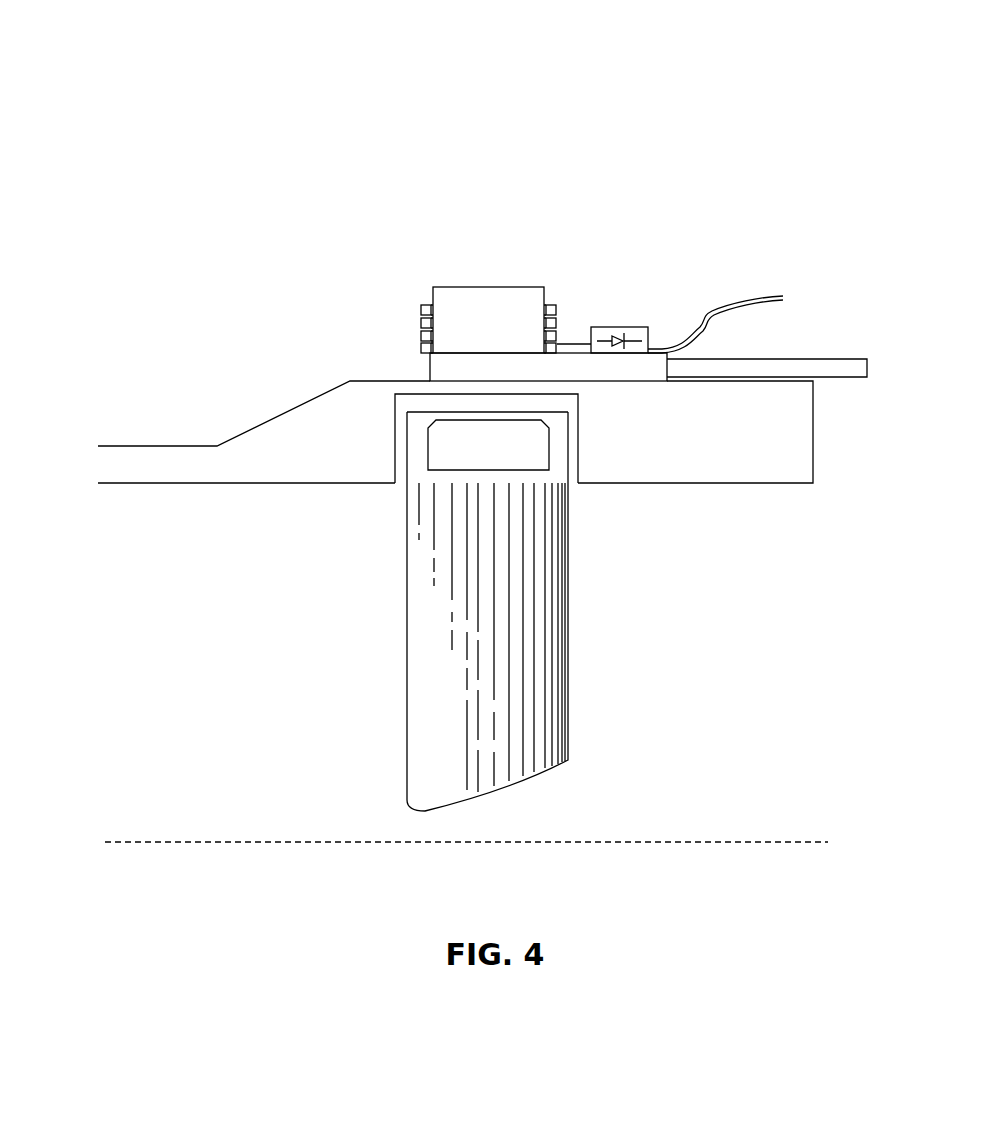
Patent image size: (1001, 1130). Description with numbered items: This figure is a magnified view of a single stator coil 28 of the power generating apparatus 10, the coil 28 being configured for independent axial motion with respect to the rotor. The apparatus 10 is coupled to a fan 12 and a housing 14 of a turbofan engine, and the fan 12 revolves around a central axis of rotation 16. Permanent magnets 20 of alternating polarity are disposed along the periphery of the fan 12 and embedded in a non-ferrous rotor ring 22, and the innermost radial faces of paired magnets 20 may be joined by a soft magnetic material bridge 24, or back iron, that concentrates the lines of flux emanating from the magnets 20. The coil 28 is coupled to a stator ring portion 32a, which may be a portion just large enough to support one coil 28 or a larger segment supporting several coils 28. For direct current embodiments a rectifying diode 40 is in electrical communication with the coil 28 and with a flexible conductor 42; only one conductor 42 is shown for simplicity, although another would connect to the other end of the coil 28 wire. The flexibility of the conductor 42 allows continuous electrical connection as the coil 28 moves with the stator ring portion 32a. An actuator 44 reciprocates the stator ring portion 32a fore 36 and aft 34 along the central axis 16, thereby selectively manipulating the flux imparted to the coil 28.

The power generating apparatus 10 is at (542, 84).
The fan 12 is at (457, 693).
The housing 14 is at (338, 418).
The central axis of rotation 16 is at (466, 830).
The permanent magnets 20 is at (525, 452).
The rotor ring 22 is at (417, 463).
The soft magnetic material bridge 24 is at (513, 305).
The coil 28 is at (558, 310).
The stator ring portion 32a is at (430, 372).
The aft 34 is at (922, 440).
The fore 36 is at (27, 442).
The rectifying diode 40 is at (633, 327).
The flexible conductor 42 is at (760, 293).
The actuator 44 is at (845, 360).